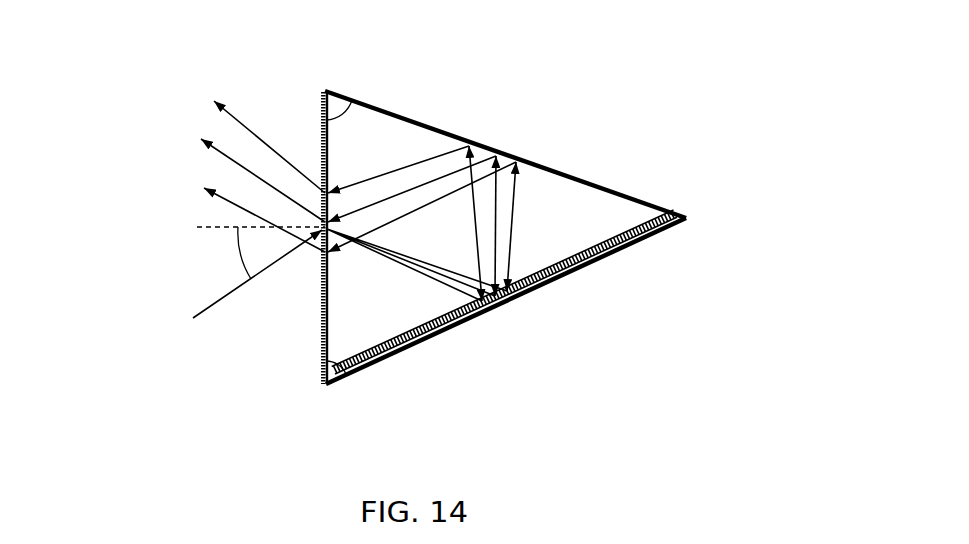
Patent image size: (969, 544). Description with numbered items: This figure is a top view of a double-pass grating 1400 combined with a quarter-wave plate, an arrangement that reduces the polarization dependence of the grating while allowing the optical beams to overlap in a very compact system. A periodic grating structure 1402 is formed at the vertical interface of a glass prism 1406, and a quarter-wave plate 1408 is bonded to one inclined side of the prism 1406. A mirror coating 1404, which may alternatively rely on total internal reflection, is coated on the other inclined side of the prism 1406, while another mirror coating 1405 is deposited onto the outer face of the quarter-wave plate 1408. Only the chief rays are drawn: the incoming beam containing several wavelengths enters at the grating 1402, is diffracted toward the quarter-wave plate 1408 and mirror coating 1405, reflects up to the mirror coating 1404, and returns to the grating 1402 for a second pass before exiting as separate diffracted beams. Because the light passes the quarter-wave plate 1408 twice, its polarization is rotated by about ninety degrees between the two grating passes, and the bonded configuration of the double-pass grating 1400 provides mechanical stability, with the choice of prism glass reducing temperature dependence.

The double-pass grating 1400 is at (146, 39).
The periodic grating structure 1402 is at (321, 116).
The mirror coating 1404 is at (587, 178).
The mirror coating 1405 is at (720, 282).
The prism 1406 is at (380, 335).
The quarter-wave plate 1408 is at (460, 327).